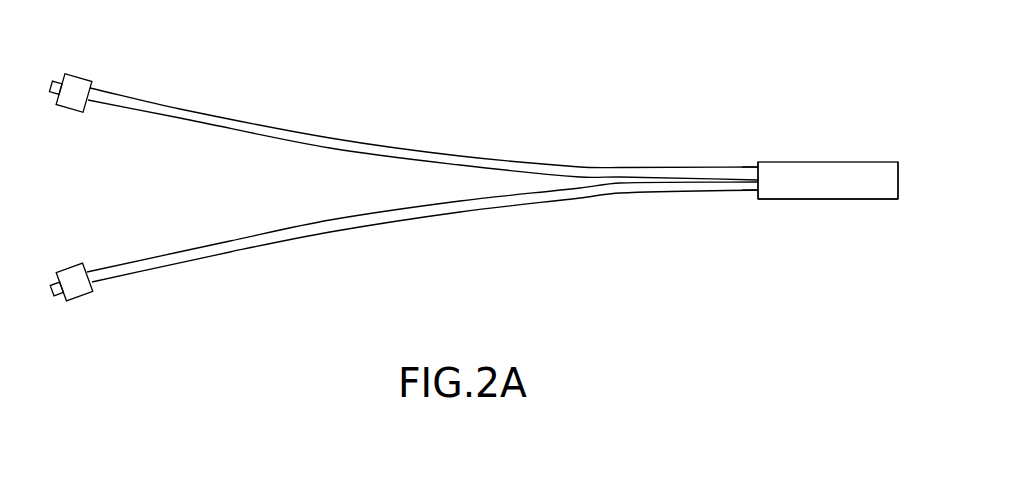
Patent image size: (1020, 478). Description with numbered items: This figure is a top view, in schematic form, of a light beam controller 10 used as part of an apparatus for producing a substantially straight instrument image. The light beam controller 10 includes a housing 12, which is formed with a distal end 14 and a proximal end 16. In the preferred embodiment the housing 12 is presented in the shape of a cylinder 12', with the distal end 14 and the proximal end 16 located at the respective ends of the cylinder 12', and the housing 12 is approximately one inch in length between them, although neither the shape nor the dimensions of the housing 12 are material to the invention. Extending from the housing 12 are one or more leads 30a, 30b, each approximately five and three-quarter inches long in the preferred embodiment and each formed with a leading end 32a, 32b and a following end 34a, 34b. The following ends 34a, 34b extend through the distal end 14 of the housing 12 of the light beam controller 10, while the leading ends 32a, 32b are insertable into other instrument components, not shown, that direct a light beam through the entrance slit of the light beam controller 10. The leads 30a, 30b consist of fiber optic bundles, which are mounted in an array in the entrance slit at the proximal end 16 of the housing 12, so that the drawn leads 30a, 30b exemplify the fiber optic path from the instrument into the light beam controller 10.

The light beam controller 10 is at (455, 98).
The housing 12 is at (828, 145).
The cylinder 12' is at (828, 231).
The distal end 14 is at (757, 199).
The proximal end 16 is at (900, 187).
The lead 30a is at (215, 117).
The lead 30b is at (230, 241).
The leading end 32a is at (90, 90).
The leading end 32b is at (88, 263).
The following end 34a is at (757, 160).
The following end 34b is at (755, 190).